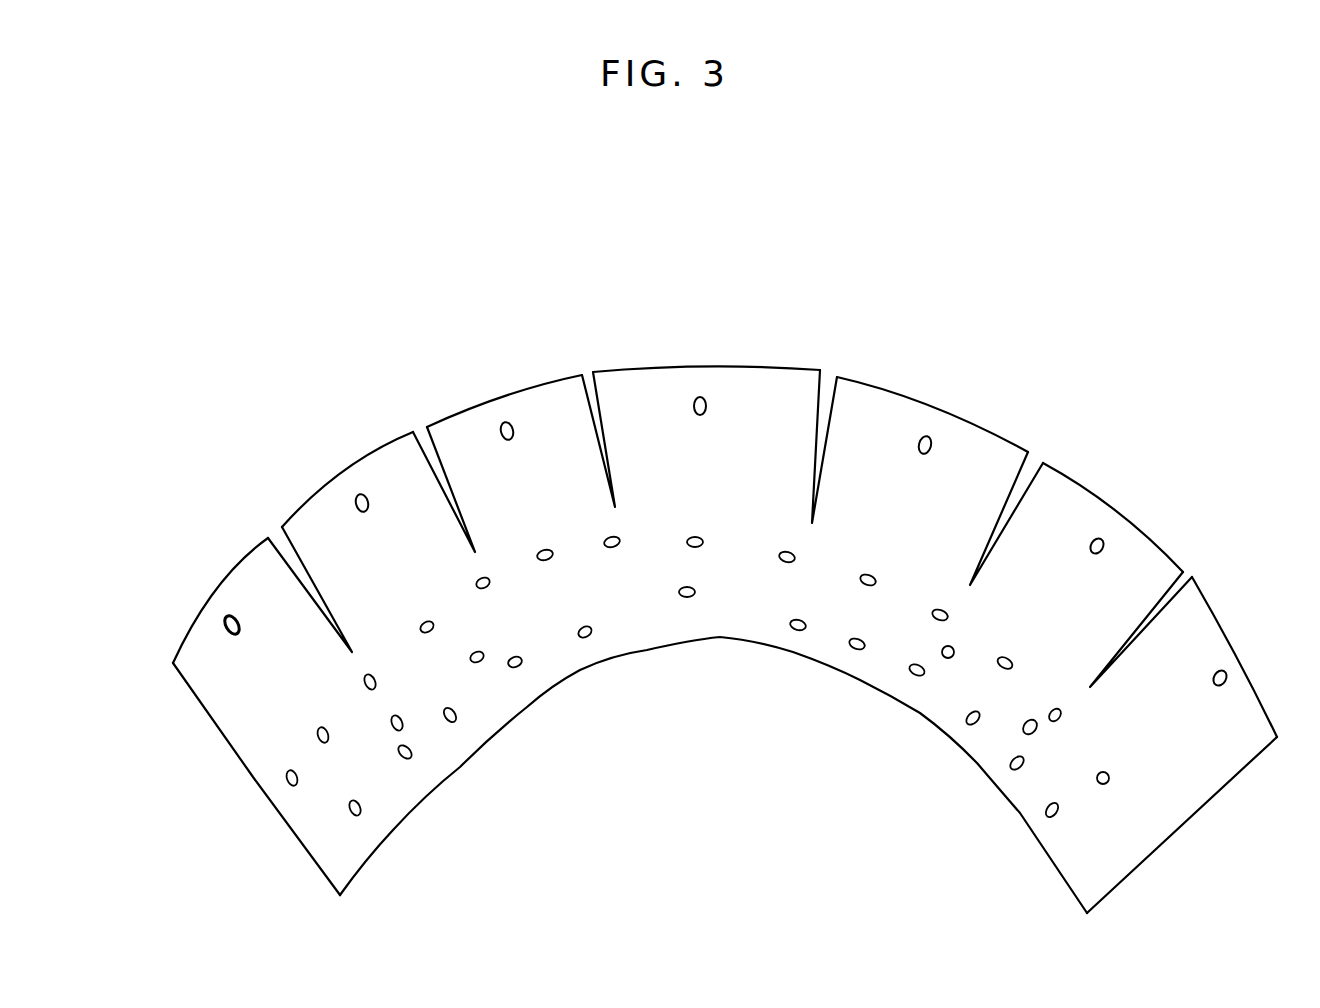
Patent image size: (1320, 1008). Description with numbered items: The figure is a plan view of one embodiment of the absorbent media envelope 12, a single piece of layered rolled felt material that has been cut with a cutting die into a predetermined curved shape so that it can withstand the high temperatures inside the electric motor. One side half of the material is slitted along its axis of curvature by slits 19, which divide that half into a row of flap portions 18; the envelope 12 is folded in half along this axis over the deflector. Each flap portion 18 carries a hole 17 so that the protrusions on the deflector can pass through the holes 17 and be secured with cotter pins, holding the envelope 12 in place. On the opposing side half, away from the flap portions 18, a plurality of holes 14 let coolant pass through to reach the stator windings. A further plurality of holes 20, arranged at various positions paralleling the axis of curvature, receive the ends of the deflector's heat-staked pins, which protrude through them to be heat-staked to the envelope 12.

The absorbent media envelope 12 is at (993, 432).
The holes 14 is at (1109, 780).
The holes 17 is at (1100, 539).
The flap portions 18 is at (1150, 565).
The slits 19 is at (1192, 582).
The holes 20 is at (948, 660).